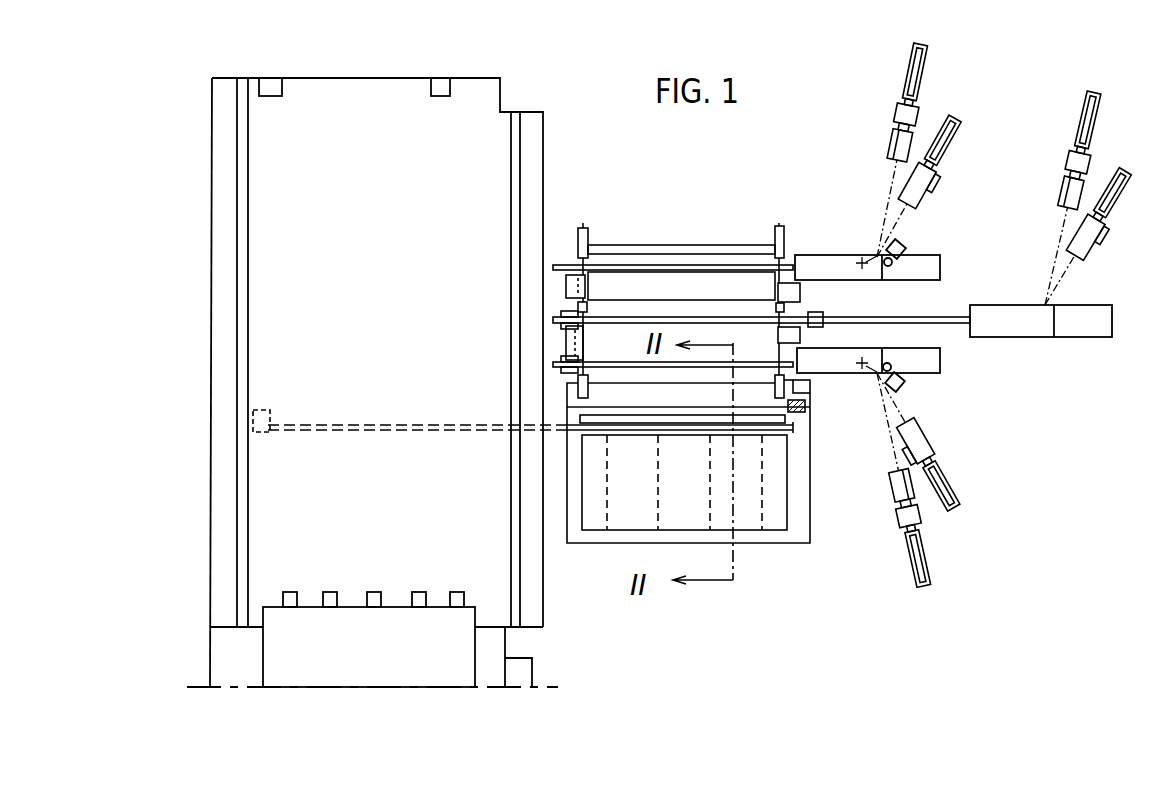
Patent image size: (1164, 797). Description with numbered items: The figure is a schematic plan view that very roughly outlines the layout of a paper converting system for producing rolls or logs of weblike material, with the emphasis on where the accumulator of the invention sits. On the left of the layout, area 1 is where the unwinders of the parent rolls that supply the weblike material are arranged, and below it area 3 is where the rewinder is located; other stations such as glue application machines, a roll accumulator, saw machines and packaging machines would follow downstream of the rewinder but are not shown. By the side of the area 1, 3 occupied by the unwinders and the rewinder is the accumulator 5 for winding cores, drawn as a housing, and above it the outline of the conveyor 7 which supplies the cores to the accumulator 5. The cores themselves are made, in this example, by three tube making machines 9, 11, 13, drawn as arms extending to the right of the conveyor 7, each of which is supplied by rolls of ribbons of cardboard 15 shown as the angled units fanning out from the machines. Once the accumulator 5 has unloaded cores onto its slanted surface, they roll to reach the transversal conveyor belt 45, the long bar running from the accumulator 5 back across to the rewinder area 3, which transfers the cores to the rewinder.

The unwinder area 1 is at (382, 250).
The rewinder area 3 is at (398, 520).
The accumulator 5 is at (783, 543).
The conveyor 7 is at (657, 245).
The tube making machine 9 is at (940, 365).
The tube making machine 11 is at (1008, 332).
The tube making machine 13 is at (940, 267).
The rolls of ribbons of cardboard 15 is at (875, 112).
The transversal conveyor belt 45 is at (556, 430).